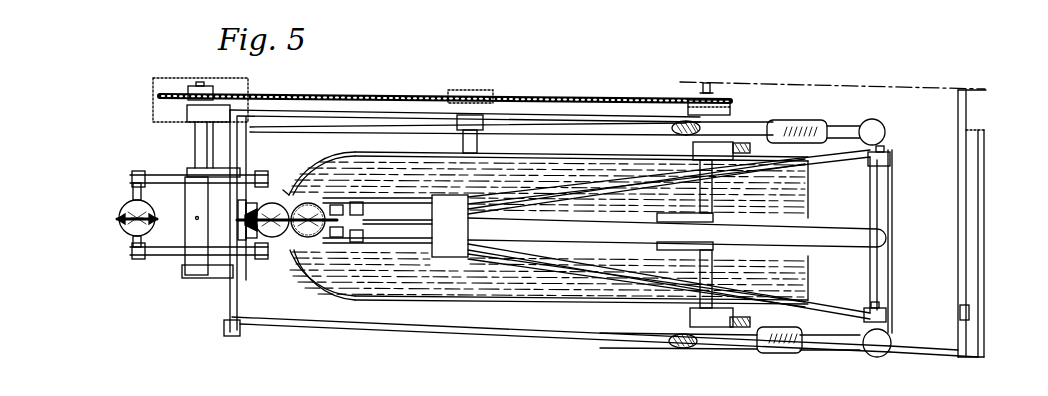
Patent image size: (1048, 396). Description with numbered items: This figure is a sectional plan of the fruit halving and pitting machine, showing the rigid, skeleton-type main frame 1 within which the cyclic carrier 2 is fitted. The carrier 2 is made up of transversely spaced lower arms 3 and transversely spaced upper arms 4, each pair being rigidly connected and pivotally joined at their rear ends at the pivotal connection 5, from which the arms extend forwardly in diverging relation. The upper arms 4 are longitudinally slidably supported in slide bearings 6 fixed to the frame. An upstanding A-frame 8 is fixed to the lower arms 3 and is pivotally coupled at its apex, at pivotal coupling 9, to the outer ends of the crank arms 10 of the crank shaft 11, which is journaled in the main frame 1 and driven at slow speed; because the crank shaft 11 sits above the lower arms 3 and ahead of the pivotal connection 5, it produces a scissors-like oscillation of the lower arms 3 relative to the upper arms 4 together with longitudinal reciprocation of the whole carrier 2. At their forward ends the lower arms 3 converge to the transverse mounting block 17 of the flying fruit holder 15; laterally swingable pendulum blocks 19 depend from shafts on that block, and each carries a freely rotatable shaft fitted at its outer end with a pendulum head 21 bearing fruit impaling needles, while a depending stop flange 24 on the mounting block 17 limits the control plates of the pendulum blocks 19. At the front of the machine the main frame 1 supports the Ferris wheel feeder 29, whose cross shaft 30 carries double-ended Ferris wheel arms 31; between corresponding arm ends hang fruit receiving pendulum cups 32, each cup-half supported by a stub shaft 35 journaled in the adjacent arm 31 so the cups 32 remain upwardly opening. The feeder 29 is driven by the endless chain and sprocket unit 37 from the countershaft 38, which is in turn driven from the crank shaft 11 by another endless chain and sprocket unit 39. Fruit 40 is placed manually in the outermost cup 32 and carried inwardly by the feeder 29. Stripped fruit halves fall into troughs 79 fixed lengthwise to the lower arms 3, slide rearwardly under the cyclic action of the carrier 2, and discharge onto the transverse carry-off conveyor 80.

The main frame 1 is at (988, 238).
The cyclic carrier 2 is at (845, 253).
The lower arms 3 is at (823, 160).
The upper arms 4 is at (737, 124).
The pivotal connection 5 is at (891, 166).
The slide bearings 6 is at (797, 121).
The A-frame 8 is at (600, 232).
The pivotal coupling 9 is at (658, 264).
The crank arms 10 is at (628, 254).
The crank shaft 11 is at (697, 293).
The flying fruit holder 15 is at (281, 249).
The transverse mounting block 17 is at (442, 251).
The pendulum blocks 19 is at (390, 238).
The pendulum head 21 is at (312, 207).
The stop flange 24 is at (355, 203).
The Ferris wheel feeder 29 is at (181, 260).
The cross shaft 30 is at (198, 142).
The Ferris wheel arms 31 is at (170, 250).
The fruit receiving pendulum cups 32 is at (117, 212).
The stub shaft 35 is at (132, 250).
The endless chain and sprocket unit 37 is at (317, 96).
The countershaft 38 is at (478, 142).
The endless chain and sprocket unit 39 is at (567, 96).
The fruit 40 is at (126, 225).
The troughs 79 is at (462, 293).
The transverse carry-off conveyor 80 is at (944, 216).